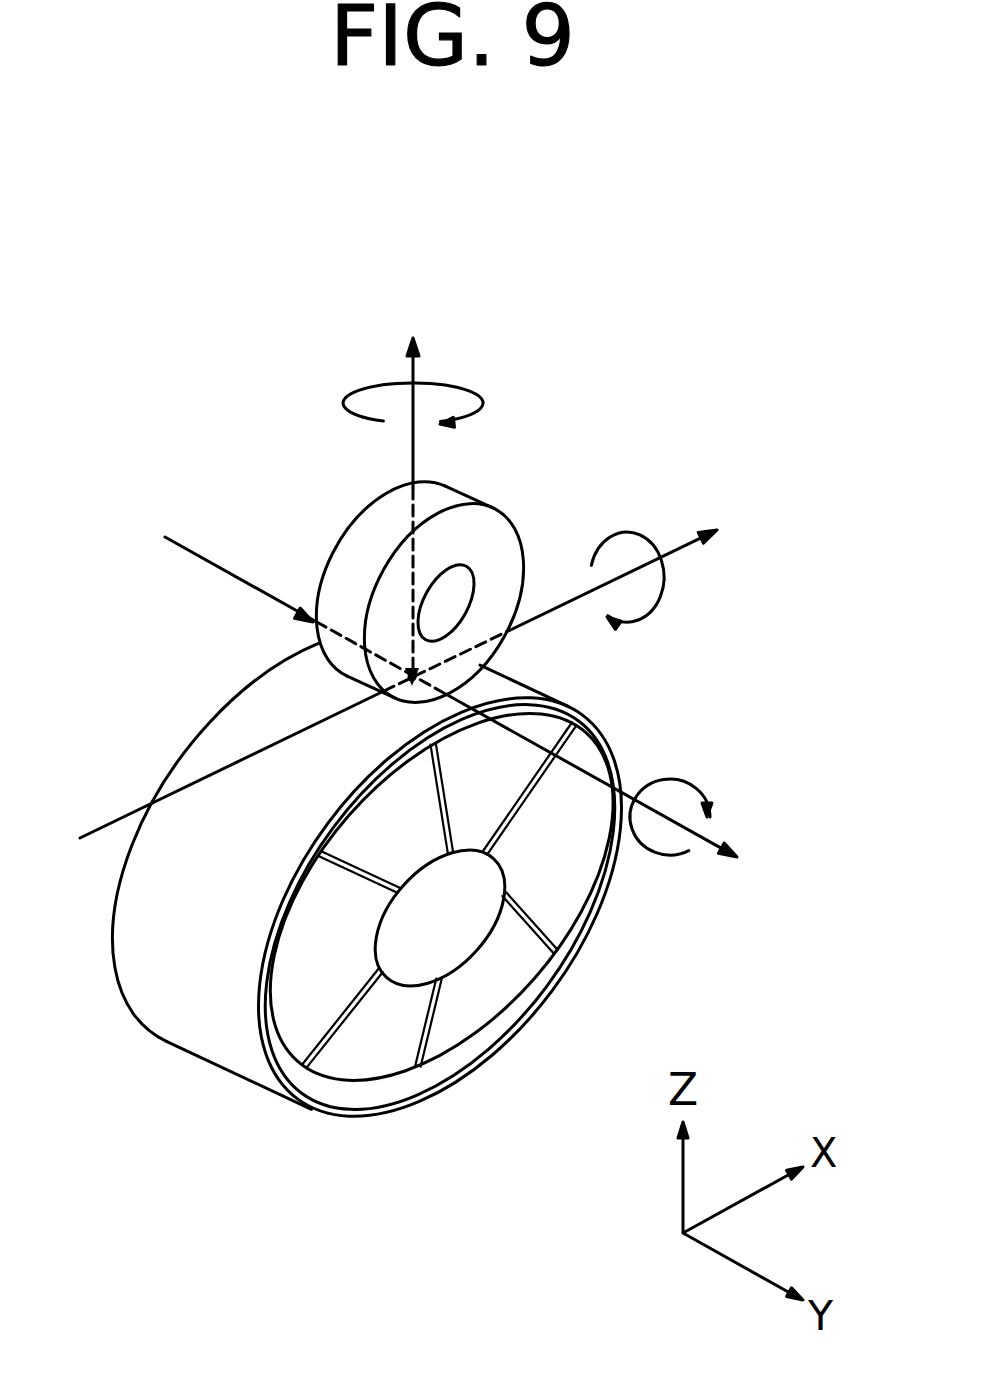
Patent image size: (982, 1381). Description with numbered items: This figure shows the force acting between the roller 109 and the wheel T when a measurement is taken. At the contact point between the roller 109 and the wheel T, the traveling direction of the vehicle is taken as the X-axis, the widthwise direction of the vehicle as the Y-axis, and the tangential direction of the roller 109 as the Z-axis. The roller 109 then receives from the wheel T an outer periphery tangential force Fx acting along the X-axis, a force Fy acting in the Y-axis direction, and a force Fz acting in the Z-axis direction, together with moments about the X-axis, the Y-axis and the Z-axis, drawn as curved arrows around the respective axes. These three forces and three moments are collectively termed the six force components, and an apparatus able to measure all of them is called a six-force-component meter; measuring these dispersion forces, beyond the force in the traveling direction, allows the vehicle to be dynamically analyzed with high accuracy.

The roller 109 is at (210, 1033).
The wheel T is at (343, 545).
The force in the Z-axis direction Fz is at (416, 480).
The outer periphery tangential force in the X-axis direction Fx is at (421, 661).
The force in the Y-axis direction Fy is at (478, 721).